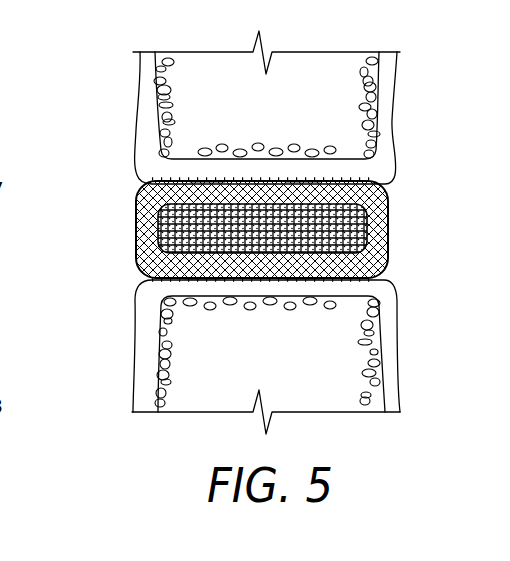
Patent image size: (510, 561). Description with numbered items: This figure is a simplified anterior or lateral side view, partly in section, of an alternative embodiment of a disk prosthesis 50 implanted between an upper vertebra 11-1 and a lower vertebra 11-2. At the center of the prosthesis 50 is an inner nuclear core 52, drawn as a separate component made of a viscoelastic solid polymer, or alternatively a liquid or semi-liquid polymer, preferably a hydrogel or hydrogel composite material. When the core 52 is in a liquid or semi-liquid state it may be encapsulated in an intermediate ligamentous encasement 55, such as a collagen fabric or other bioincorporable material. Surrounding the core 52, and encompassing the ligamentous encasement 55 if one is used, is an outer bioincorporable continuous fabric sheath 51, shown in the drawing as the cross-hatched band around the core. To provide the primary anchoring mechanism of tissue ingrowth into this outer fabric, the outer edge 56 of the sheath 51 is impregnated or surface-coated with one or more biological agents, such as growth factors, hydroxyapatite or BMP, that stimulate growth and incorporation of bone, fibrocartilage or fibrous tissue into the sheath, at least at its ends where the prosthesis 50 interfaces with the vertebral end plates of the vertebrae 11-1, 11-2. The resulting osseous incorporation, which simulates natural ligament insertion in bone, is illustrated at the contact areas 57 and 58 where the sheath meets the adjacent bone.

The upper vertebral body 11-1 is at (146, 126).
The lower vertebral body 11-2 is at (160, 362).
The prosthesis 50 is at (264, 226).
The outer bioincorporable continuous fabric sheath 51 is at (388, 262).
The inner nuclear core 52 is at (187, 232).
The intermediate ligamentous encasement 55 is at (200, 182).
The outer edge of the sheath 56 is at (201, 280).
The contact area 57 is at (298, 182).
The contact area 58 is at (301, 280).